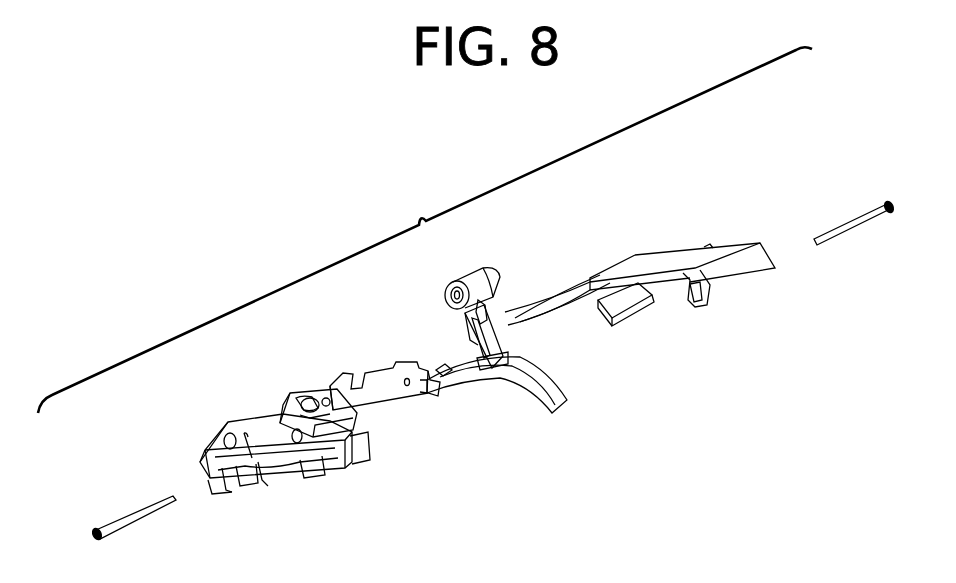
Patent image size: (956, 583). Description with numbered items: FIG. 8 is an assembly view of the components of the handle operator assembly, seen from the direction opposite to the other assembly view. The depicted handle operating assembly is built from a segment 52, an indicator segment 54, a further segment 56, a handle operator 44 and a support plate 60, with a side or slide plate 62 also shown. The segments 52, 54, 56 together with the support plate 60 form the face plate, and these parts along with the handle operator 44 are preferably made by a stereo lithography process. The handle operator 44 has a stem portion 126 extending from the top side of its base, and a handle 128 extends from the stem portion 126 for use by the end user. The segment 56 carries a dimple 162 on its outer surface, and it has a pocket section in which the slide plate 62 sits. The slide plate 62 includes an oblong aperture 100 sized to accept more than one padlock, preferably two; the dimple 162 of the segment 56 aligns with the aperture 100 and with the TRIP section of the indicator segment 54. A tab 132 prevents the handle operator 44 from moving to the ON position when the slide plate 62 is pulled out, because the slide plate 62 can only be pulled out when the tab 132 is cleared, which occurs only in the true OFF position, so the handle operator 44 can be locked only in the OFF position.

The handle operator 44 is at (487, 270).
The segment 52 is at (685, 255).
The indicator segment 54 is at (622, 302).
The segment 56 is at (284, 450).
The support plate 60 is at (380, 380).
The slide plate 62 is at (308, 392).
The aperture 100 is at (300, 398).
The stem portion 126 is at (505, 340).
The handle 128 is at (498, 285).
The tab 132 is at (470, 350).
The dimple 162 is at (248, 440).